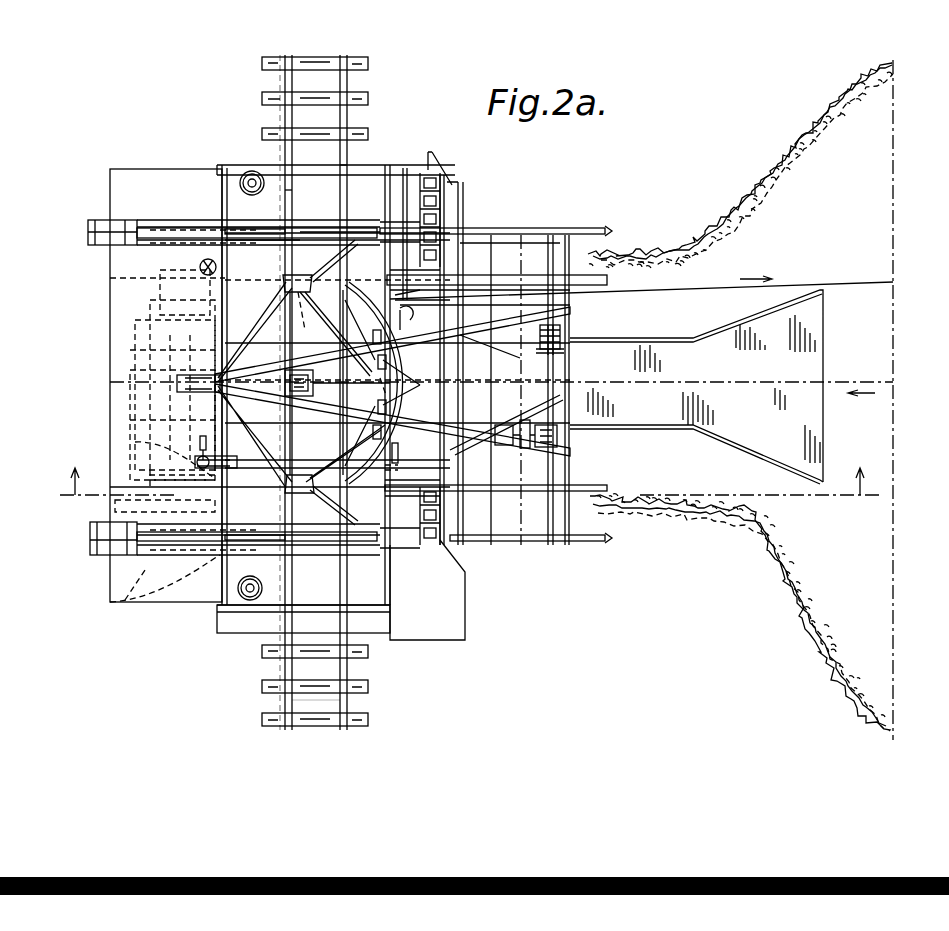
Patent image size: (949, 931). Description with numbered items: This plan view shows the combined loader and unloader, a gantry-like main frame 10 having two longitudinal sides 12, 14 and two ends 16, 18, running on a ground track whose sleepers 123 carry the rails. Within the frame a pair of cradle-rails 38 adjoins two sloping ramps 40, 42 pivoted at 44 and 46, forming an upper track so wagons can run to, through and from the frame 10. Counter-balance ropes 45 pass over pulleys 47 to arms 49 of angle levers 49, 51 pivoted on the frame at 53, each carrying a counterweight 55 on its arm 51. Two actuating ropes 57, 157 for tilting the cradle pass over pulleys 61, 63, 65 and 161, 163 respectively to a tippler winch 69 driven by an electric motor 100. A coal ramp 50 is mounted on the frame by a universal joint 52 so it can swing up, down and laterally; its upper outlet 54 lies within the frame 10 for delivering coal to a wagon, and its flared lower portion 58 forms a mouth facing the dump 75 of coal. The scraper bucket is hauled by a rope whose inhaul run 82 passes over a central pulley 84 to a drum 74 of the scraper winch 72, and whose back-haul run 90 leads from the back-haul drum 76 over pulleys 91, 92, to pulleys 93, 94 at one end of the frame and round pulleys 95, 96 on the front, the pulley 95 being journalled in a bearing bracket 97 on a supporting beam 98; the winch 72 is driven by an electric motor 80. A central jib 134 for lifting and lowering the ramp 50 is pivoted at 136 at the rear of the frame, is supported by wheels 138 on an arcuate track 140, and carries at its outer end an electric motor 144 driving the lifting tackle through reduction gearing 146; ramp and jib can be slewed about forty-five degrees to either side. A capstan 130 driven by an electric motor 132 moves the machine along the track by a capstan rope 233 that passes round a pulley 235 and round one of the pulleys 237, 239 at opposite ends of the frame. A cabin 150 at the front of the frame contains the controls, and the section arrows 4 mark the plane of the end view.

The section line 4- 4 is at (470, 496).
The main frame 10 is at (240, 166).
The longitudinal side 12 is at (222, 185).
The longitudinal side 14 is at (392, 605).
The end 16 is at (250, 600).
The end 18 is at (255, 172).
The cradle-rails 38 is at (292, 184).
The sloping pair of rails 40 is at (340, 704).
The sloping pair of rails 42 is at (262, 115).
The pivot 44 is at (345, 605).
The counter-balance rope 45 is at (310, 230).
The pivot 46 is at (345, 168).
The pulley 47 is at (445, 230).
The arm of angle lever 49 is at (270, 228).
The coal ramp 50 is at (652, 338).
The arm of angle lever 51 is at (145, 218).
The universal joint 52 is at (160, 405).
The pivot 53 is at (215, 210).
The outlet 54 is at (310, 420).
The counterweight 55 is at (95, 218).
The actuating rope 57 is at (300, 494).
The lower portion of the coal ramp 58 is at (728, 440).
The pulley 61 is at (450, 490).
The pulley 63 is at (227, 487).
The pulley 65 is at (203, 455).
The tippler winch 69 is at (198, 265).
The winch 72 is at (160, 327).
The drum 74 is at (130, 362).
The dump 75 is at (798, 130).
The back-haul drum 76 is at (135, 442).
The electric motor 80 is at (165, 312).
The inhaul run 82 is at (855, 382).
The central pulley 84 is at (177, 380).
The back-haul run 90 is at (645, 292).
The pulley 91 is at (198, 462).
The pulley 92 is at (175, 492).
The pulley 93 is at (225, 462).
The pulley 94 is at (398, 468).
The pulley 95 is at (398, 455).
The pulley 96 is at (407, 318).
The bearing bracket 97 is at (402, 340).
The supporting member 98 is at (400, 300).
The electric motor 100 is at (165, 290).
The sleepers 123 is at (262, 70).
The capstan 130 is at (115, 562).
The electric motor 132 is at (150, 590).
The central jib 134 is at (570, 455).
The pivot 136 is at (262, 310).
The wheels 138 is at (392, 363).
The arcuate track 140 is at (352, 283).
The electric motor 144 is at (505, 420).
The reduction gearing 146 is at (520, 442).
The cabin 150 is at (466, 607).
The actuating rope 157 is at (298, 300).
The pulley 161 is at (440, 283).
The pulley 163 is at (265, 288).
The capstan rope 233 is at (150, 478).
The pulley 235 is at (230, 497).
The pulley 237 is at (242, 596).
The pulley 239 is at (240, 180).